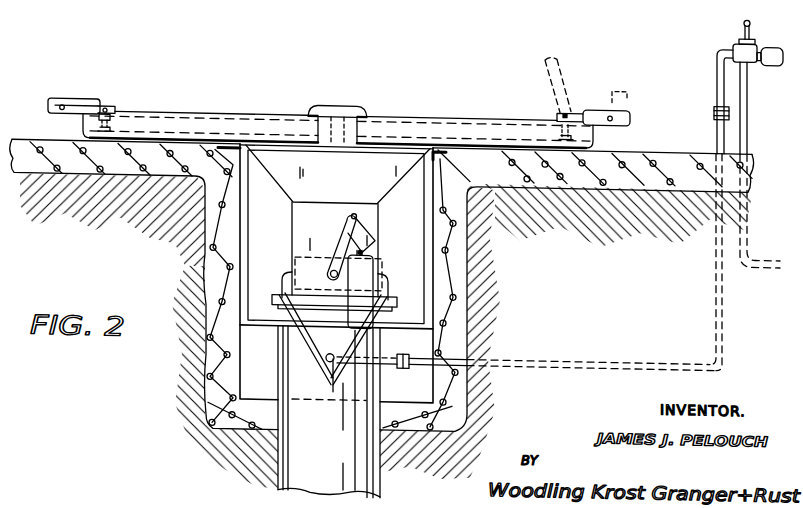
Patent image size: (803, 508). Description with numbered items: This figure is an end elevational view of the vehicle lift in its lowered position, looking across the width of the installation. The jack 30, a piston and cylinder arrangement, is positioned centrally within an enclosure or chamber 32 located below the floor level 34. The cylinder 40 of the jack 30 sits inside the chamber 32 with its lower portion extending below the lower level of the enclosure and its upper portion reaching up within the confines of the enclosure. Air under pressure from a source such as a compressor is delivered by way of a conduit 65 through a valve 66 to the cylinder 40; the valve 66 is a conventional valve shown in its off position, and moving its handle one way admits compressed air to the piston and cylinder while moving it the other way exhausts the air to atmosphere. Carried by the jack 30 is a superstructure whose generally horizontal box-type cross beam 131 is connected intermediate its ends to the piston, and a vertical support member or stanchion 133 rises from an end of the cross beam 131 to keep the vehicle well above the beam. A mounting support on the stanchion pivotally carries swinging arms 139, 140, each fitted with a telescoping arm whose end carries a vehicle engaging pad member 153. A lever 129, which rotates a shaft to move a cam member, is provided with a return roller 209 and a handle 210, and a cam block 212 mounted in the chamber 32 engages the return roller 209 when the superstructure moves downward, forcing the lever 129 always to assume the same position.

The jack 30 is at (262, 480).
The enclosure or chamber 32 is at (267, 359).
The floor level 34 is at (35, 148).
The cylinder 40 is at (378, 474).
The conduit 65 is at (722, 298).
The valve 66 is at (733, 33).
The lever 129 is at (345, 228).
The cross beam 131 is at (313, 252).
The first vertical support member or stanchion 133 is at (347, 172).
The swinging arm 139 is at (231, 108).
The swinging arm 140 is at (463, 106).
The vehicle engaging pad member 153 is at (100, 78).
The return roller 209 is at (376, 233).
The handle 210 is at (357, 209).
The cam block 212 is at (373, 255).